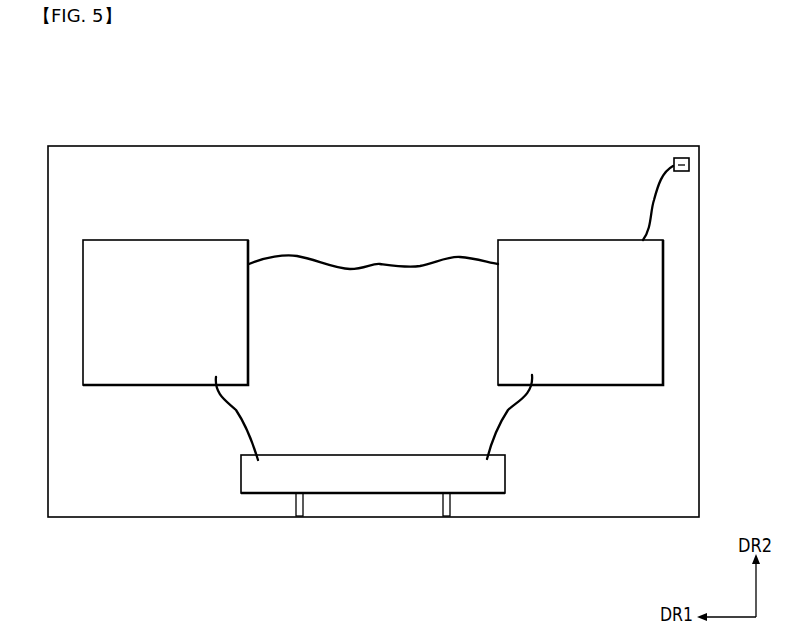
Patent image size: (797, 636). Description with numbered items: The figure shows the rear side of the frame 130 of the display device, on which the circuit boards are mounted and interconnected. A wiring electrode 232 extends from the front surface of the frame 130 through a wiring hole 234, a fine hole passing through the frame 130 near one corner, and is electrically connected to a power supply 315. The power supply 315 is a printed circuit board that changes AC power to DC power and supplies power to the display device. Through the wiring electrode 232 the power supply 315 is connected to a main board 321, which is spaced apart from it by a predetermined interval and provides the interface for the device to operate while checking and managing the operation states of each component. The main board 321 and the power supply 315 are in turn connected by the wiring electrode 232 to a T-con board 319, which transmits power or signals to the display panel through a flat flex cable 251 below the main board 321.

The frame 130 is at (500, 158).
The wiring electrode 232 is at (365, 262).
The wiring hole 234 is at (680, 150).
The power supply 315 is at (600, 360).
The T-con board 319 is at (146, 363).
The main board 321 is at (370, 483).
The flat flex cable (FFC) 251 is at (447, 517).